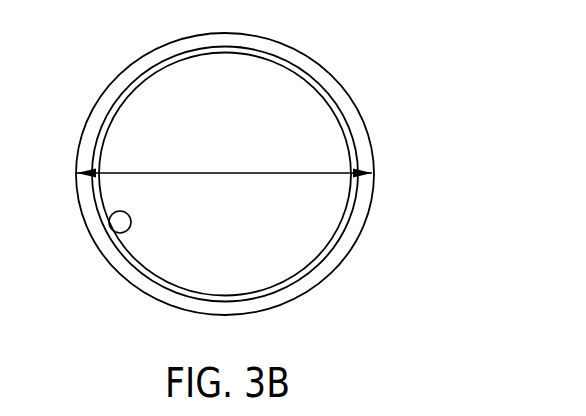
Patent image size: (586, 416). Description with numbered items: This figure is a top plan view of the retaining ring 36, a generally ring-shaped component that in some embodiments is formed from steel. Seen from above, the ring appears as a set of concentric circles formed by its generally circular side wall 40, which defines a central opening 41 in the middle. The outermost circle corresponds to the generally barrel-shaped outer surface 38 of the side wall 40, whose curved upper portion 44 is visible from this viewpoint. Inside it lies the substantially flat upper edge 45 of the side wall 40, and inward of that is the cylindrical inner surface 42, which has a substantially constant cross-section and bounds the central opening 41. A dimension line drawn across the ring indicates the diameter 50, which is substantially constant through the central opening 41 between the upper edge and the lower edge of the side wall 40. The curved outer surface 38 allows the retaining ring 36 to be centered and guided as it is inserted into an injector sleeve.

The retaining ring 36 is at (450, 161).
The outer surface 38 is at (80, 133).
The circular side wall 40 is at (366, 105).
The central opening 41 is at (192, 272).
The cylindrical inner surface 42 is at (115, 233).
The curved upper portion 44 is at (99, 103).
The upper edge 45 is at (142, 80).
The diameter 50 is at (268, 170).